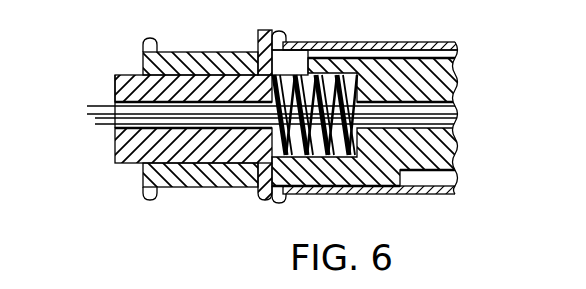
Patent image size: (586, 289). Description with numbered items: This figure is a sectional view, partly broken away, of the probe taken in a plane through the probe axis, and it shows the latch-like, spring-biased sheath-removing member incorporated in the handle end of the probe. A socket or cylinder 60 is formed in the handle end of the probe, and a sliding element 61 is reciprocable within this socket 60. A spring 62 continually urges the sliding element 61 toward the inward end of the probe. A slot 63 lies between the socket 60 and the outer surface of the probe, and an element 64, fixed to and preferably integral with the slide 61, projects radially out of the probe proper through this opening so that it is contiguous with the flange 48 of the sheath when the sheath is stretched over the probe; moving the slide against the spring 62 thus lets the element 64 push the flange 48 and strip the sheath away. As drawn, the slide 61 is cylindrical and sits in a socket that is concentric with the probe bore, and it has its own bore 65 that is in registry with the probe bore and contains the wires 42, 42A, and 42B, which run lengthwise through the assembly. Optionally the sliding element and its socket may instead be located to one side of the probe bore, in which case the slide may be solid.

The wires 42 is at (245, 113).
The wire 42A is at (88, 118).
The wire 42B is at (95, 124).
The flange 48 is at (281, 33).
The socket 60 is at (139, 80).
The sliding element 61 is at (113, 78).
The spring 62 is at (322, 157).
The slot 63 is at (295, 60).
The element 64 is at (262, 33).
The bore 65 is at (117, 126).